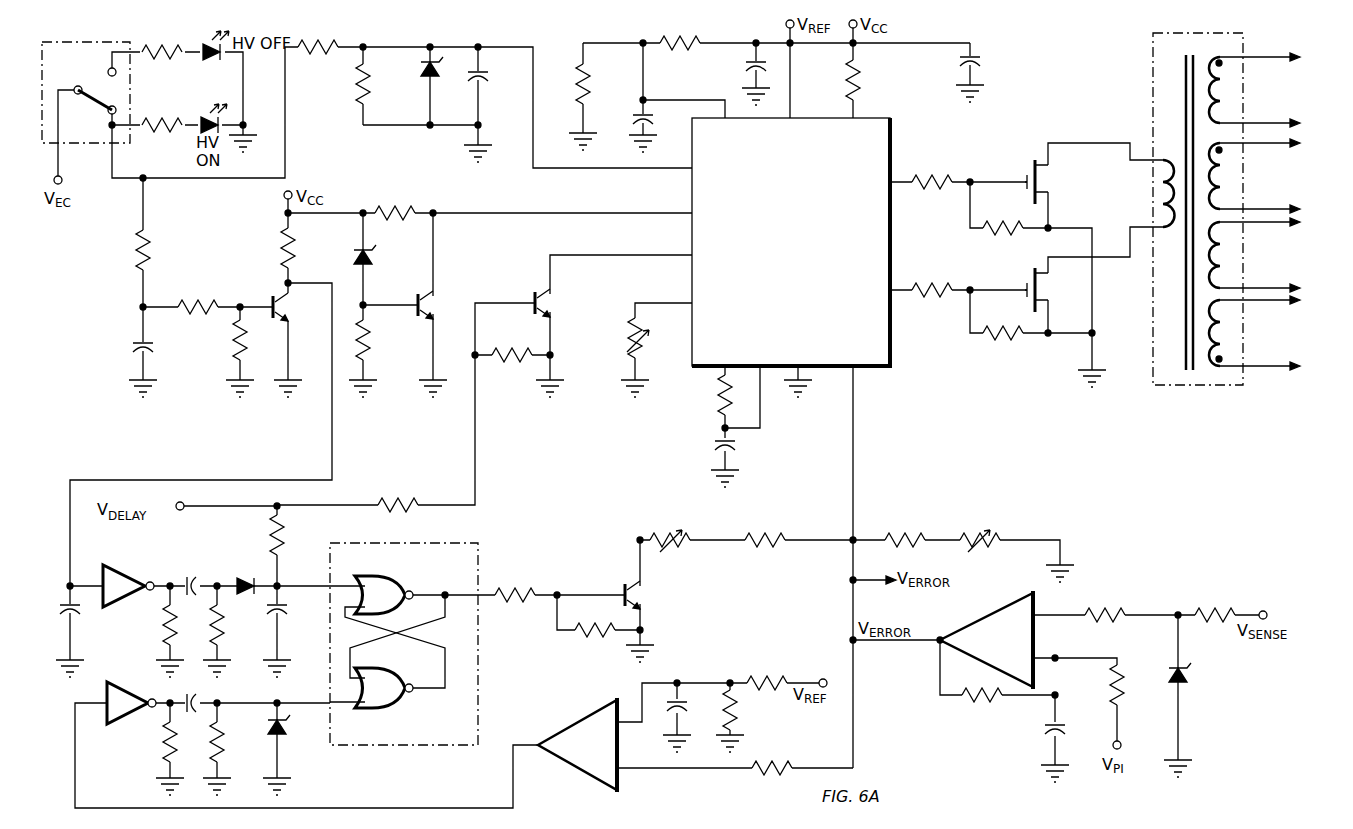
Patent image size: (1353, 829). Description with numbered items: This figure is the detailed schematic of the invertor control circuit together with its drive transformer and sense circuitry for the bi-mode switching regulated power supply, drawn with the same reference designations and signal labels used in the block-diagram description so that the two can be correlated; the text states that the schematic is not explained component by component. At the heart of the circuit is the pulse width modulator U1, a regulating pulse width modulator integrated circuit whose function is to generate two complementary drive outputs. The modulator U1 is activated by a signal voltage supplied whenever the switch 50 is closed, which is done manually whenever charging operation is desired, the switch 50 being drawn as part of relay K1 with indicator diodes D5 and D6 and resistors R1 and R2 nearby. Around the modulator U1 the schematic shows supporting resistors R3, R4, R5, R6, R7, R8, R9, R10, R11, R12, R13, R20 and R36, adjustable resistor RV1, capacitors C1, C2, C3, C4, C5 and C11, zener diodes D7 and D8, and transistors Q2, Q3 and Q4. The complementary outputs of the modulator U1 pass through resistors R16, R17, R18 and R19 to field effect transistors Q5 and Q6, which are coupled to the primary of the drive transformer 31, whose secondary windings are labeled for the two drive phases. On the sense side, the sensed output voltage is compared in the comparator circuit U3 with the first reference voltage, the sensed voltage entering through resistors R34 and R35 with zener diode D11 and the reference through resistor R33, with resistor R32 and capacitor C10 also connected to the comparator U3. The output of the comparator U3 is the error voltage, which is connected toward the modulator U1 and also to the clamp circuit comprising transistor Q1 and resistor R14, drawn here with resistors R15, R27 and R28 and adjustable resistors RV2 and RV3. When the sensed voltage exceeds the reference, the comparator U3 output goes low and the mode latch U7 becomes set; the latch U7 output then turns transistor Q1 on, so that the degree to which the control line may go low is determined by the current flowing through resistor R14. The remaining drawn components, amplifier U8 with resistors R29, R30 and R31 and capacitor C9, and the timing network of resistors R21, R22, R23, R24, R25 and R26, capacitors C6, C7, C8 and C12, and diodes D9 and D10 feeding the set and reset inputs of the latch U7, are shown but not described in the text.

The switch 50 is at (94, 38).
The transformer 31 is at (1153, 33).
The relay K1 is at (94, 102).
The resistor R1 is at (162, 42).
The resistor R2 is at (160, 115).
The resistor R3 is at (155, 250).
The resistor R4 is at (198, 297).
The resistor R5 is at (252, 340).
The resistor R6 is at (300, 248).
The resistor R7 is at (375, 340).
The resistor R8 is at (395, 226).
The resistor R9 is at (318, 61).
The resistor R10 is at (379, 89).
The resistor R11 is at (601, 83).
The resistor R12 is at (680, 54).
The resistor R13 is at (707, 395).
The resistor R14 is at (765, 530).
The resistor R15 is at (903, 530).
The resistor R16 is at (932, 172).
The resistor R17 is at (932, 279).
The resistor R18 is at (1003, 238).
The resistor R19 is at (1003, 343).
The resistor R20 is at (870, 80).
The resistor R21 is at (398, 516).
The resistor R22 is at (254, 535).
The resistor R23 is at (148, 629).
The resistor R24 is at (234, 629).
The resistor R25 is at (148, 746).
The resistor R26 is at (234, 746).
The resistor R27 is at (515, 583).
The resistor R28 is at (594, 642).
The resistor R29 is at (747, 710).
The resistor R30 is at (767, 671).
The resistor R31 is at (772, 758).
The resistor R32 is at (982, 686).
The resistor R33 is at (1133, 690).
The resistor R34 is at (1105, 604).
The resistor R35 is at (1215, 604).
The resistor R36 is at (507, 367).
The variable resistor RV1 is at (649, 344).
The variable resistor RV2 is at (662, 533).
The variable resistor RV3 is at (976, 533).
The capacitor C1 is at (131, 344).
The capacitor C2 is at (488, 79).
The capacitor C3 is at (627, 116).
The capacitor C4 is at (739, 75).
The capacitor C5 is at (980, 62).
The capacitor C6 is at (188, 574).
The capacitor C7 is at (191, 692).
The capacitor C8 is at (289, 612).
The capacitor C9 is at (688, 704).
The capacitor C10 is at (1032, 724).
The capacitor C11 is at (710, 446).
The capacitor C12 is at (87, 618).
The LED HV ON D5 is at (203, 112).
The LED HV OFF D6 is at (202, 55).
The zener diode D7 is at (377, 258).
The zener diode D8 is at (440, 86).
The diode D9 is at (242, 574).
The zener diode D10 is at (295, 729).
The zener diode D11 is at (1199, 676).
The transistor Q1 is at (645, 594).
The transistor Q2 is at (555, 302).
The transistor Q3 is at (294, 307).
The transistor Q4 is at (438, 303).
The MOSFET Q5 is at (1050, 182).
The MOSFET Q6 is at (1050, 290).
The pulse width modulator U1 is at (792, 242).
The comparator circuit U3 is at (986, 640).
The mode latch U7 is at (464, 572).
The comparator UB U8 is at (577, 745).